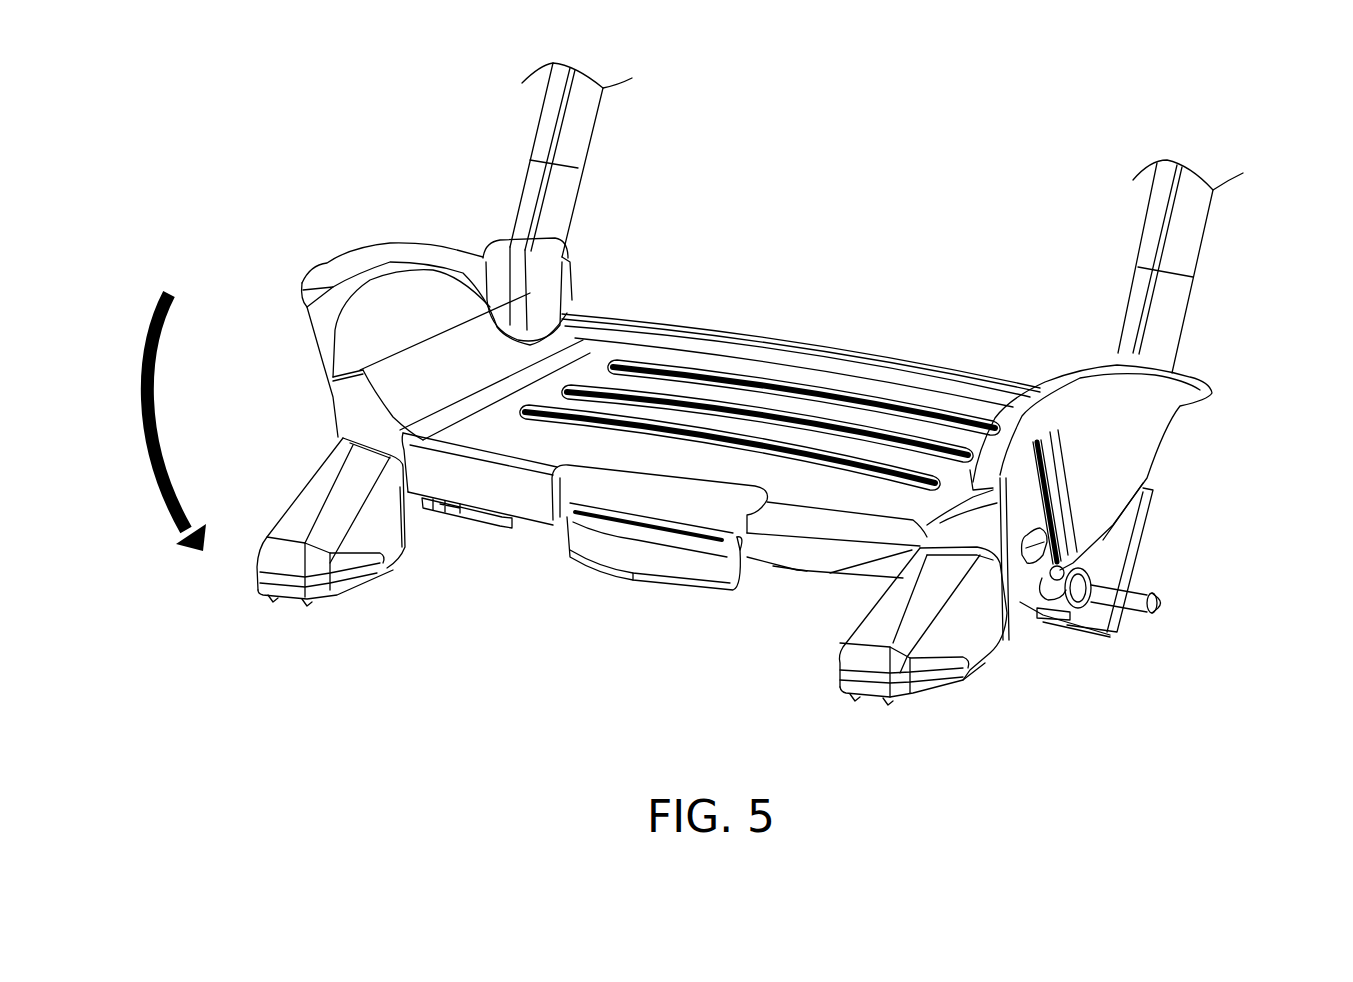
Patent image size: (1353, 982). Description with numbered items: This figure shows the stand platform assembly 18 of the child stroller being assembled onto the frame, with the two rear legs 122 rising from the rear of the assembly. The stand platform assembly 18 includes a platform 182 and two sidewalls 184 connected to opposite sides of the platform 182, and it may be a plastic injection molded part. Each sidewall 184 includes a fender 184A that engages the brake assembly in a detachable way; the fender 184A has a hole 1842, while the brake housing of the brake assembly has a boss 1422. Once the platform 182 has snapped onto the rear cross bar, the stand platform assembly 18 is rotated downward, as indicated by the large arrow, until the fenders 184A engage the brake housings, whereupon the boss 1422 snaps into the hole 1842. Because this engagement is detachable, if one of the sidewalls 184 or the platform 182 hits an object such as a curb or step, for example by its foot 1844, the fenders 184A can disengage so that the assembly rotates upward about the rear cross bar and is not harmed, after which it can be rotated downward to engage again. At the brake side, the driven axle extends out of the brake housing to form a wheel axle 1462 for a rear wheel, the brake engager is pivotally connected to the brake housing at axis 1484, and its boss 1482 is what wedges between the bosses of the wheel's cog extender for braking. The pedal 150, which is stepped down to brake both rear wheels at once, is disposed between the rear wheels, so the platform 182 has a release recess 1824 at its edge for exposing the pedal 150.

The stand platform assembly 18 is at (797, 312).
The rear leg 122 is at (560, 207).
The pedal 150 is at (600, 557).
The platform 182 is at (800, 500).
The sidewall 184 is at (464, 361).
The fender 184A is at (368, 260).
The boss 1422 is at (1028, 603).
The wheel axle 1462 is at (1140, 597).
The boss 1482 is at (1047, 620).
The axis 1484 is at (1078, 560).
The release recess 1824 is at (683, 495).
The hole 1842 is at (1029, 519).
The foot 1844 is at (353, 550).